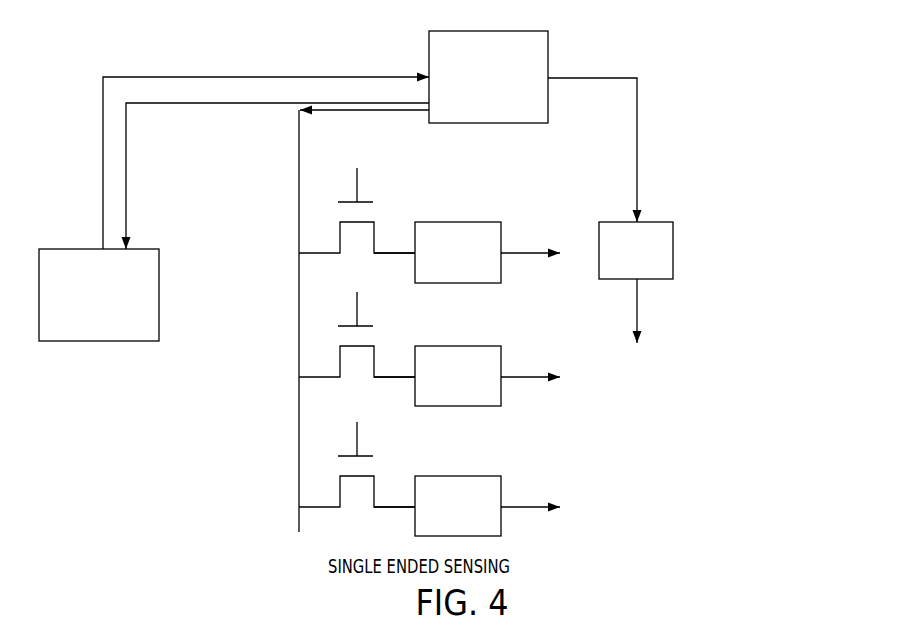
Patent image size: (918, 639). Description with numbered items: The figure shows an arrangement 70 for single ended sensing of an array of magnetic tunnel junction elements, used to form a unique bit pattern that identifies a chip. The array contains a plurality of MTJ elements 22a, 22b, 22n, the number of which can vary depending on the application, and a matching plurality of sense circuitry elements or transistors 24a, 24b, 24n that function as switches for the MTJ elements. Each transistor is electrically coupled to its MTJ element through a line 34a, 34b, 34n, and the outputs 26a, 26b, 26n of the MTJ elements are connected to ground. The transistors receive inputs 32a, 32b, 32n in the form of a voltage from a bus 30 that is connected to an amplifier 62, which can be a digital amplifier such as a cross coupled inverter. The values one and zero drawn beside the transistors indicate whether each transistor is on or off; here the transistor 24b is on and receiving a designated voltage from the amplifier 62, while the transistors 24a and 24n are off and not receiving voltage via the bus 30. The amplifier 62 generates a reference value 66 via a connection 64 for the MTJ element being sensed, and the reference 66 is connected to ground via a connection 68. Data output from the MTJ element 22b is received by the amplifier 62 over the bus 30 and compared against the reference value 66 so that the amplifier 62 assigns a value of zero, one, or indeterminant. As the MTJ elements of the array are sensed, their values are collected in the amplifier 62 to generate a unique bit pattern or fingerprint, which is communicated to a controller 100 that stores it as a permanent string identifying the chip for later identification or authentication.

The controller 100 is at (162, 298).
The amplifier 62 is at (552, 52).
The reference connection 64 is at (638, 165).
The reference value 66 is at (675, 247).
The ground connection 68 is at (638, 313).
The arrangement for single ended sensing 70 is at (701, 73).
The bus 30 is at (299, 147).
The magnetic tunnel junction element 22a is at (468, 222).
The magnetic tunnel junction element 22b is at (468, 346).
The magnetic tunnel junction element 22n is at (468, 476).
The sense circuitry element or transistor 24a is at (364, 202).
The sense circuitry element or transistor 24b is at (364, 326).
The sense circuitry element or transistor 24n is at (364, 456).
The output of MTJ element 26a is at (533, 252).
The output of MTJ element 26b is at (533, 376).
The output of MTJ element 26n is at (533, 506).
The input 32a is at (303, 250).
The input 32b is at (303, 374).
The input 32n is at (303, 504).
The line 34a is at (388, 250).
The line 34b is at (392, 376).
The line 34n is at (388, 504).